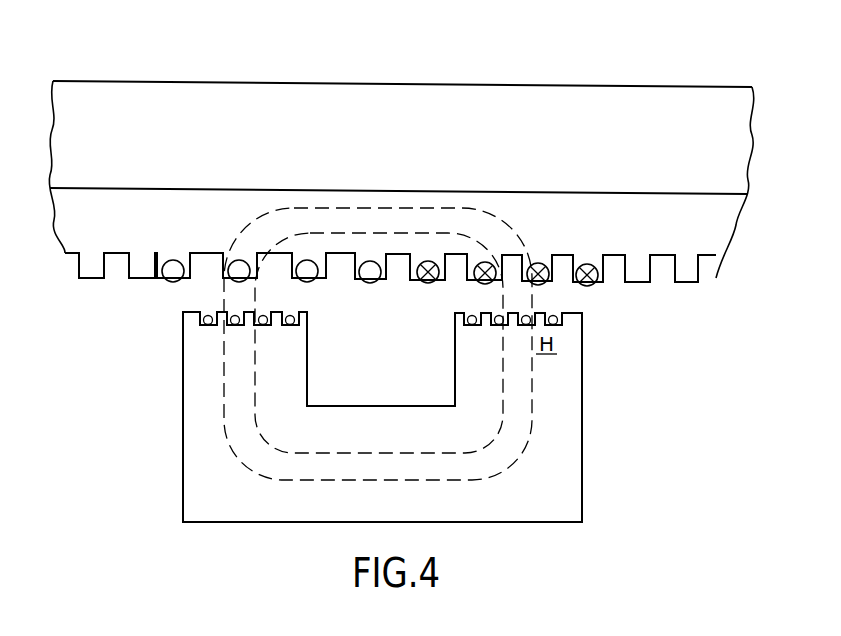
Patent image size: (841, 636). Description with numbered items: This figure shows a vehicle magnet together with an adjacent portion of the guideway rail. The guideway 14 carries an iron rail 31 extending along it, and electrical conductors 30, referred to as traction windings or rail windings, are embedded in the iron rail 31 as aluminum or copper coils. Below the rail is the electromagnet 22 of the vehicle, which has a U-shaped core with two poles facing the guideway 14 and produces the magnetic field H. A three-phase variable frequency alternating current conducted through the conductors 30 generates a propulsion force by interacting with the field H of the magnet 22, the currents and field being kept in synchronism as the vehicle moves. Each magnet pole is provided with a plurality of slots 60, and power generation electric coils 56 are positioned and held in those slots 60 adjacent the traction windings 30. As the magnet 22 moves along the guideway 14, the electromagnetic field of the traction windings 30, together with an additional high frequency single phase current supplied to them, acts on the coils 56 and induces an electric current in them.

The guideway 14 is at (667, 110).
The iron rail 31 is at (717, 232).
The electrical conductors 30 is at (169, 282).
The electromagnet 22 is at (585, 468).
The power generation electric coils 56 is at (560, 321).
The slots 60 is at (211, 324).